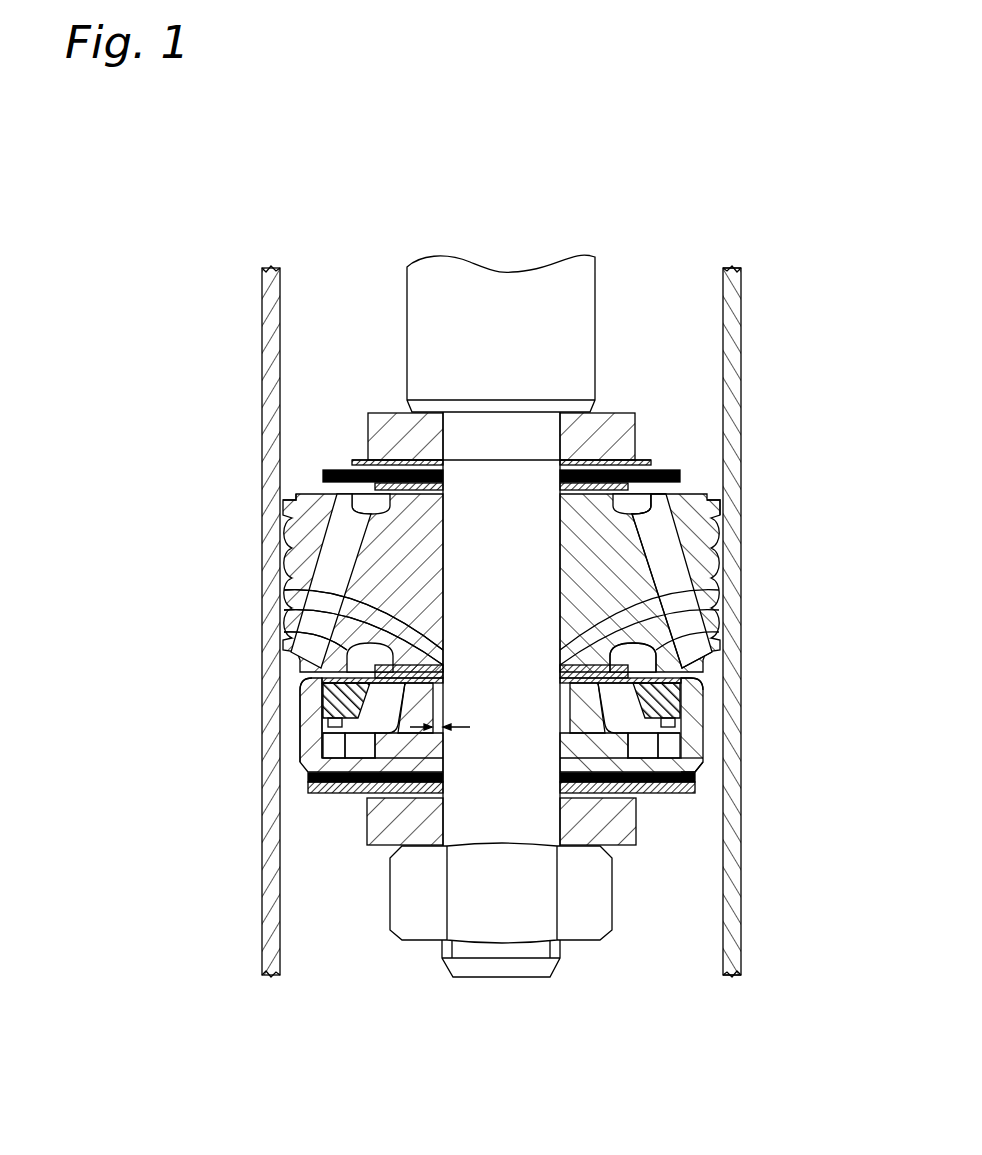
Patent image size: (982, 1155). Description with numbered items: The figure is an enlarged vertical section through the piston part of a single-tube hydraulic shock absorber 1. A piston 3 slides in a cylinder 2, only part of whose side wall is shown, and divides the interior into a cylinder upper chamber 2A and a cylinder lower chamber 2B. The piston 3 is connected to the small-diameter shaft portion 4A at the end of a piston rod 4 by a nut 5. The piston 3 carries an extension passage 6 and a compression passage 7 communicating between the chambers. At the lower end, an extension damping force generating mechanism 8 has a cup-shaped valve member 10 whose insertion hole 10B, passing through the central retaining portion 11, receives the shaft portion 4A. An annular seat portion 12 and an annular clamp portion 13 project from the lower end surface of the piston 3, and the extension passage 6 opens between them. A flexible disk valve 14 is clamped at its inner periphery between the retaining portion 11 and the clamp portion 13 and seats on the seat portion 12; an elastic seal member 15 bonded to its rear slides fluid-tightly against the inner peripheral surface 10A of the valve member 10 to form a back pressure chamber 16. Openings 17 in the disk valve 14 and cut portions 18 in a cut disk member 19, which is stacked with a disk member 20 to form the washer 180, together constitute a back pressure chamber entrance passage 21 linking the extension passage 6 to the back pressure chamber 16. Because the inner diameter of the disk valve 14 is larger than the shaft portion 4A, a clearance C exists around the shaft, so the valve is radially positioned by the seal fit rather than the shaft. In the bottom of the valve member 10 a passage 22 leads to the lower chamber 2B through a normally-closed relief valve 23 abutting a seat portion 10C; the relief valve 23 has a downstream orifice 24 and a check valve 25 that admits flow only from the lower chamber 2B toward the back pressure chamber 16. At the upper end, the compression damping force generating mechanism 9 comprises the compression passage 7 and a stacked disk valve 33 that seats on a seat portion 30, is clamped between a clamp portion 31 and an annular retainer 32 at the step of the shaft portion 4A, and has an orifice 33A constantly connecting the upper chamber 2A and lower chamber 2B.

The shock absorber 1 is at (657, 207).
The cylinder 2 is at (741, 303).
The cylinder upper chamber 2A is at (682, 284).
The cylinder lower chamber 2B is at (668, 953).
The piston 3 is at (698, 582).
The piston rod 4 is at (522, 307).
The shaft portion 4A is at (512, 822).
The nut 5 is at (422, 925).
The extension passage 6 is at (690, 503).
The compression passage 7 is at (300, 670).
The extension damping force generating mechanism 8 is at (318, 722).
The compression damping force generating mechanism 9 is at (672, 460).
The valve member 10 is at (296, 735).
The inner peripheral surface 10A is at (320, 752).
The insertion hole 10B is at (543, 750).
The seat portion 10C is at (700, 765).
The retaining portion 11 is at (320, 720).
The seat portion 12 is at (673, 673).
The clamp portion 13 is at (640, 655).
The disk valve 14 is at (693, 670).
The elastic seal member 15 is at (678, 700).
The back pressure chamber 16 is at (643, 727).
The openings 17 is at (330, 692).
The cut portions 18 is at (320, 634).
The cut disk member 19 is at (300, 592).
The disk member 20 is at (350, 603).
The back pressure chamber entrance passage 21 is at (640, 672).
The passage 22 is at (350, 747).
The relief valve 23 is at (302, 788).
The downstream orifice 24 is at (310, 773).
The check valve 25 is at (680, 762).
The seat portion 30 is at (325, 494).
The clamp portion 31 is at (285, 510).
The annular retainer 32 is at (388, 430).
The disk valve 33 is at (345, 463).
The orifice 33A is at (325, 476).
The washer 180 is at (203, 555).
The clearance C is at (468, 737).